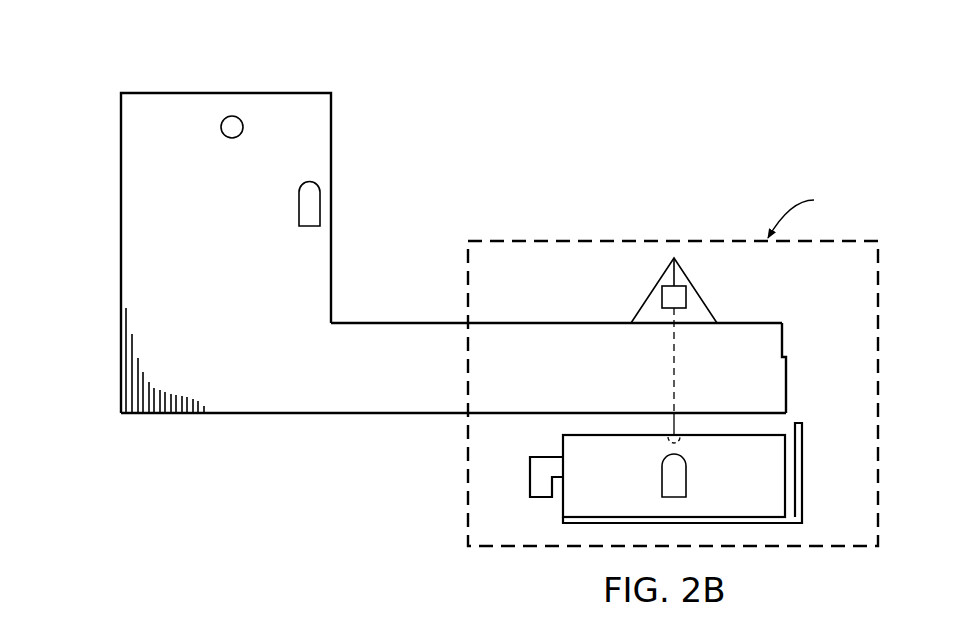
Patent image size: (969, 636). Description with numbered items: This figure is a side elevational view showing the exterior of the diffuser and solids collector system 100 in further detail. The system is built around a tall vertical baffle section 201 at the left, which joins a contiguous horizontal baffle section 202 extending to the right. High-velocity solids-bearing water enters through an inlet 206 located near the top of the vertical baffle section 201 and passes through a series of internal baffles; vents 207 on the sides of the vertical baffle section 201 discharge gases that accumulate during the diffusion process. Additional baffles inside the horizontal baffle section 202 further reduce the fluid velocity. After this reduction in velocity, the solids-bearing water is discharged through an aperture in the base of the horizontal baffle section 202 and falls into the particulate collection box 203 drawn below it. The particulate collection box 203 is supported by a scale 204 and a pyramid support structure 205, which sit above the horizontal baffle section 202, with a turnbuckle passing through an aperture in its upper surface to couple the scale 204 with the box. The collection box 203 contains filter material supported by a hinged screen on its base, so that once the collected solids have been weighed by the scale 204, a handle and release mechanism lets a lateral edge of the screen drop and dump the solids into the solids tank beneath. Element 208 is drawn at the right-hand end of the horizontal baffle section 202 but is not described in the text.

The diffuser and solids collector system 100 is at (667, 79).
The vertical baffle section 201 is at (120, 179).
The horizontal baffle section 202 is at (418, 323).
The particulate collection box 203 is at (561, 507).
The scale 204 is at (688, 298).
The pyramid support structure 205 is at (652, 290).
The inlet 206 is at (243, 125).
The vents 207 is at (297, 208).
The outlet end wall 208 is at (788, 337).